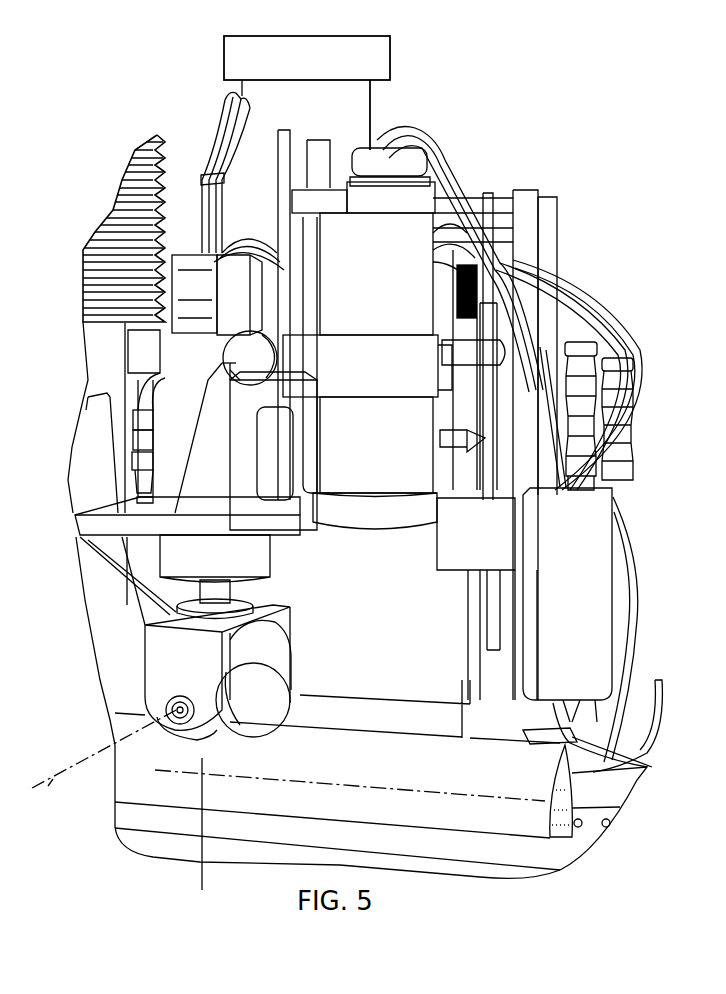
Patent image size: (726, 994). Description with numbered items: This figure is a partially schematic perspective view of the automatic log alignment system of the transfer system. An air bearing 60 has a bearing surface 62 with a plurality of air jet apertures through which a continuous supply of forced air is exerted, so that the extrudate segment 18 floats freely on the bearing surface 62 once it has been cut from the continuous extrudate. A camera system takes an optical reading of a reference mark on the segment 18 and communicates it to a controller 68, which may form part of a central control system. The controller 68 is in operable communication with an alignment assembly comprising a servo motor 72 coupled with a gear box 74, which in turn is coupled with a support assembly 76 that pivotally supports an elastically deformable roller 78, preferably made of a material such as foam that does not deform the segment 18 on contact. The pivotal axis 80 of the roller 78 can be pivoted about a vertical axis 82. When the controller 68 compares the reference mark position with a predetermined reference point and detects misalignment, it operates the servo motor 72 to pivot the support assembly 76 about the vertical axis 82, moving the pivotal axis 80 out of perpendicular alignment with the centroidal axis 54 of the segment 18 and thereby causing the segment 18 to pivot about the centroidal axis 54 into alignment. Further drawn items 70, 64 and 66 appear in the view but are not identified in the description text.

The controller 68 is at (392, 50).
The servo motor 72 is at (160, 332).
The gear box 74 is at (188, 363).
The support plate 70 is at (83, 527).
The support assembly 76 is at (153, 660).
The elastically deformable roller 78 is at (263, 660).
The pivotal axis 80 is at (50, 780).
The air bearing 60 is at (140, 817).
The vertical axis 82 is at (202, 855).
The centroidal axis 54 is at (527, 807).
The extrudate segment 18 is at (537, 823).
The bearing surface 62 is at (600, 792).
The mounting holes 64 is at (617, 822).
The motor cylinder 66 is at (400, 473).